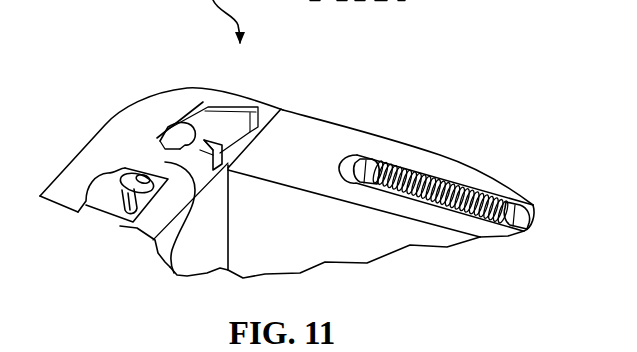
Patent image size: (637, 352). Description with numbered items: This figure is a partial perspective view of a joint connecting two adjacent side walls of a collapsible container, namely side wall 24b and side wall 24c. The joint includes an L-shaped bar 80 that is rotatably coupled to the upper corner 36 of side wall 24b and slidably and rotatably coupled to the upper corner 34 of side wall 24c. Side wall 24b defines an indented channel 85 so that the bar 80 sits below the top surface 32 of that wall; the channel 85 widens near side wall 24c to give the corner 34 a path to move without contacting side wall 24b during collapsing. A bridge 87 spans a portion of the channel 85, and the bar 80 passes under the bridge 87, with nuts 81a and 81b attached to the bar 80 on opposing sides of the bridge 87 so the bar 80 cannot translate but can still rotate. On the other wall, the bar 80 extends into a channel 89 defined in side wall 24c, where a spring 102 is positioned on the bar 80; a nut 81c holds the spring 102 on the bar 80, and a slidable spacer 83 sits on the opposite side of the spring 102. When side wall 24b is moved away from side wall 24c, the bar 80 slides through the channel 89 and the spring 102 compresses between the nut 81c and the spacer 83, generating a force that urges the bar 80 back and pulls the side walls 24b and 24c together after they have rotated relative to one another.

The side wall 24b is at (140, 128).
The side wall 24c is at (467, 177).
The top surface 32 is at (114, 164).
The upper corner 34 is at (307, 137).
The upper corner 36 is at (237, 105).
The L-shaped bar 80 is at (202, 128).
The nut 81a is at (80, 207).
The nut 81b is at (229, 209).
The nut 81c is at (504, 220).
The spacer 83 is at (354, 173).
The indented channel 85 is at (183, 118).
The bridge 87 is at (170, 266).
The channel 89 is at (531, 208).
The spring 102 is at (425, 183).